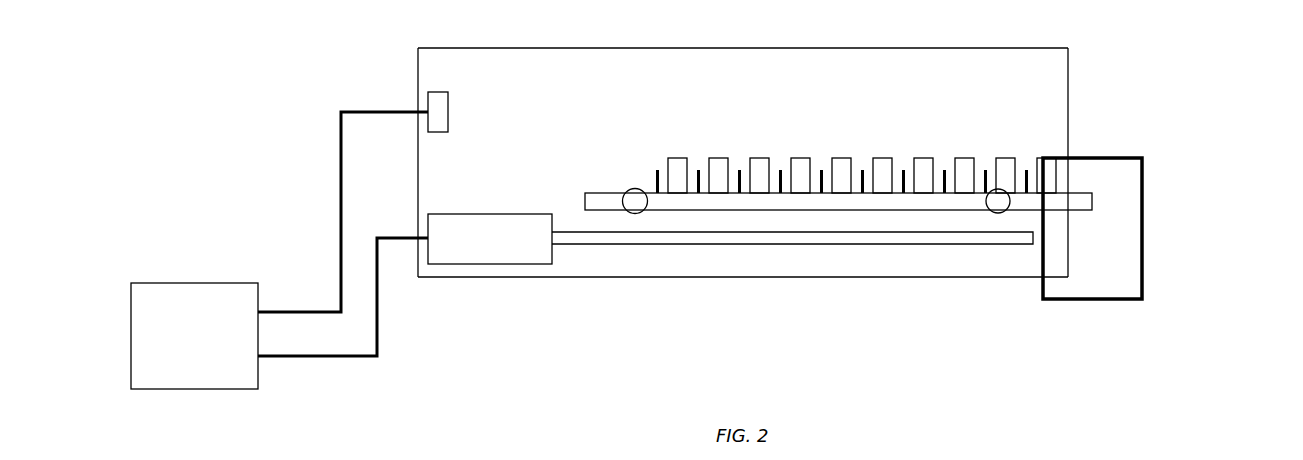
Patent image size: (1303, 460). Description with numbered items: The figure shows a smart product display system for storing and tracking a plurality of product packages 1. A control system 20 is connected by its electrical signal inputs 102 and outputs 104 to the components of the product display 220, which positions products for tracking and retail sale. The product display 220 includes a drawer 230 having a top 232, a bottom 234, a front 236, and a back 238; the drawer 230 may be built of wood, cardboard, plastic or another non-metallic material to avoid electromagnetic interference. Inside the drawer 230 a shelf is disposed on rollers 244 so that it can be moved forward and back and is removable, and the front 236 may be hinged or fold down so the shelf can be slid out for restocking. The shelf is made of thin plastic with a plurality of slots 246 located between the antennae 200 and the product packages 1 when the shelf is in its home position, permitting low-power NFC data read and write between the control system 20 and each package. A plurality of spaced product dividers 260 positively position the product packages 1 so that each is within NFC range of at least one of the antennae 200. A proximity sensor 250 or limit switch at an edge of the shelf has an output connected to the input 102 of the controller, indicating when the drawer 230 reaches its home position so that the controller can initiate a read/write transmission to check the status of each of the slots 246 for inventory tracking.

The product packages 1 is at (679, 166).
The control system 20 is at (132, 390).
The electrical signal inputs 102 is at (334, 234).
The electrical signal outputs 104 is at (302, 310).
The antennae 200 is at (580, 238).
The product display 220 is at (1214, 106).
The drawer 230 is at (1050, 48).
The top 232 is at (864, 48).
The bottom 234 is at (887, 278).
The front 236 is at (1068, 78).
The back 238 is at (418, 72).
The rollers 244 is at (634, 205).
The slots 246 is at (690, 200).
The proximity sensor 250 is at (448, 112).
The spaced product dividers 260 is at (656, 178).